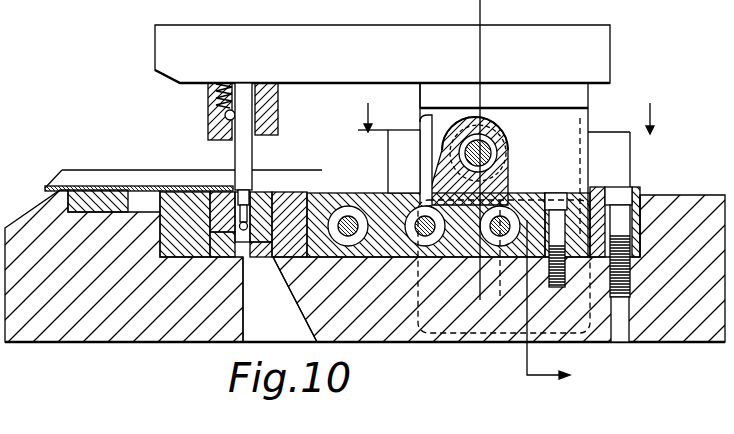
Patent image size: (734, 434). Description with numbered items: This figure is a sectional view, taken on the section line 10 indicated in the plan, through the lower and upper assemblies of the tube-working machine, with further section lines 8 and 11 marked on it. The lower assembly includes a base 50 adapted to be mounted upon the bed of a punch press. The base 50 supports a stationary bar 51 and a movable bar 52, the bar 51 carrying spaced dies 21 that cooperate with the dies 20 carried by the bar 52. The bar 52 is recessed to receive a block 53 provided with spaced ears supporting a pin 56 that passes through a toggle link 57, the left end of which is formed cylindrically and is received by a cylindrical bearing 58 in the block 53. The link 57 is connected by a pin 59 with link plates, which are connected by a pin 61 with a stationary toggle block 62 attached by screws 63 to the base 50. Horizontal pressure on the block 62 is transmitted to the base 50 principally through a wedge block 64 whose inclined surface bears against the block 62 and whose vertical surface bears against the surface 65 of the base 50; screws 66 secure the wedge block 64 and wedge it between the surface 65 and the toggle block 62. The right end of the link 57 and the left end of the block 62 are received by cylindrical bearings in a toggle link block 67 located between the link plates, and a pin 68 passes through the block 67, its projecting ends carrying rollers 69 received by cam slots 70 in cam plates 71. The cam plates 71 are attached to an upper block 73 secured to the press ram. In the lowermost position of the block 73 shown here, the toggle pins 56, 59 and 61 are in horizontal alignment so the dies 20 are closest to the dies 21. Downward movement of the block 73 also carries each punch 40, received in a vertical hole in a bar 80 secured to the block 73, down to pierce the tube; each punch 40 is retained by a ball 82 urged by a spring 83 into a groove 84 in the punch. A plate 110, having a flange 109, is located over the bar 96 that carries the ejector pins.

The section line 8- 8 is at (513, 136).
The section line 10- 10 is at (506, 150).
The section line 11- 11 is at (511, 295).
The dies 20 is at (268, 188).
The dies 21 is at (224, 194).
The punch 40 is at (234, 160).
The base 50 is at (24, 338).
The stationary bar 51 is at (172, 192).
The movable bar 52 is at (302, 187).
The block 53 is at (318, 193).
The pin 56 is at (348, 206).
The toggle link 57 is at (388, 182).
The cylindrical bearing 58 is at (280, 299).
The pin 59 is at (421, 206).
The pin 61 is at (506, 206).
The toggle block 62 is at (533, 200).
The screws 63 is at (556, 193).
The wedge block 64 is at (600, 190).
The surface of base 65 is at (660, 212).
The screws 66 is at (630, 190).
The toggle link block 67 is at (440, 130).
The pin 68 is at (495, 140).
The rollers 69 is at (448, 118).
The cam slots 70 is at (487, 125).
The cam plate 71 is at (590, 97).
The upper block 73 is at (163, 45).
The bar 80 is at (208, 106).
The ball 82 is at (236, 110).
The spring 83 is at (218, 80).
The groove 84 is at (254, 85).
The bar 96 is at (97, 190).
The flange 109 is at (62, 171).
The plate 110 is at (50, 188).